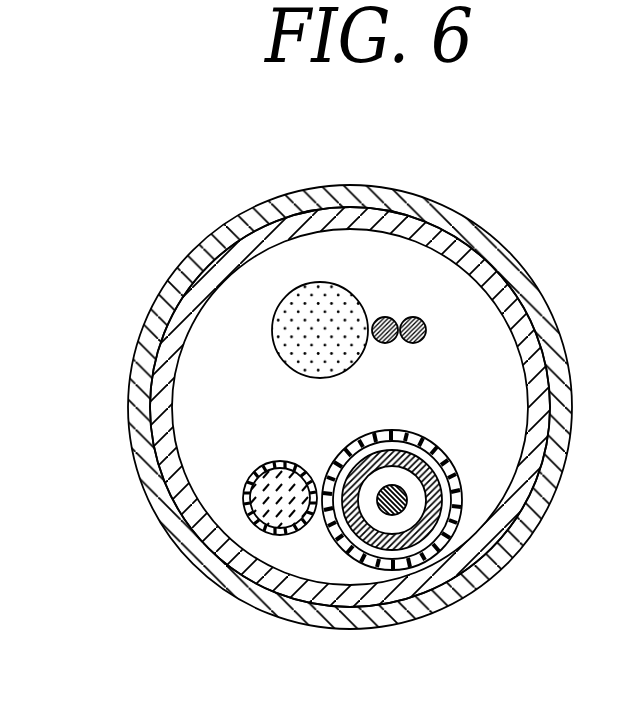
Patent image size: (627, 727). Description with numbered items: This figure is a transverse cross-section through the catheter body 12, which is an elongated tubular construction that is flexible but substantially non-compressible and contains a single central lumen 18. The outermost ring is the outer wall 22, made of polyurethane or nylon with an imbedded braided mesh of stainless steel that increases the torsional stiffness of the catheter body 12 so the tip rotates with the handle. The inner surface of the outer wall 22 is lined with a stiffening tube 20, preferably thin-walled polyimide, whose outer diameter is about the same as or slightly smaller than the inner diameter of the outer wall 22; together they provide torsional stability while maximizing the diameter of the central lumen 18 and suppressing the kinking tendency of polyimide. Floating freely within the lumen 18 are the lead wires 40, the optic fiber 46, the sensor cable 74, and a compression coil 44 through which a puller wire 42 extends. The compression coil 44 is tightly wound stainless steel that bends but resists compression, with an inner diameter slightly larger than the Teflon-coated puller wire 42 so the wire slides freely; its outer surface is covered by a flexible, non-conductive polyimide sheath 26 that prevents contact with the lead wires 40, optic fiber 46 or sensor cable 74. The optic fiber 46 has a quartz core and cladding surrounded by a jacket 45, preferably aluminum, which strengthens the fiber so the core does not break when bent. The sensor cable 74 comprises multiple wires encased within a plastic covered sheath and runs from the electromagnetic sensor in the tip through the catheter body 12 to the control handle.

The catheter body 12 is at (591, 321).
The central lumen 18 is at (467, 353).
The stiffening tube 20 is at (280, 228).
The outer wall 22 is at (320, 195).
The non-conductive sheath 26 is at (455, 509).
The lead wires 40 is at (413, 317).
The puller wire 42 is at (393, 505).
The compression coil 44 is at (452, 485).
The jacket 45 is at (243, 500).
The optic fiber 46 is at (270, 505).
The sensor cable 74 is at (300, 320).